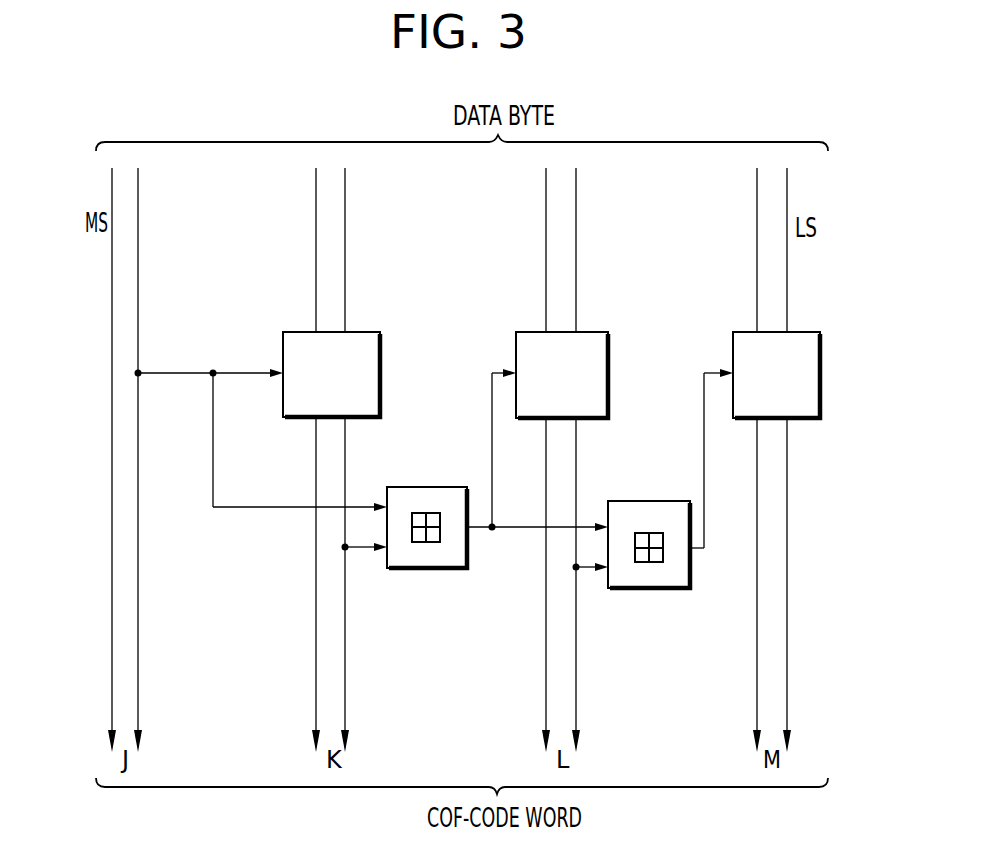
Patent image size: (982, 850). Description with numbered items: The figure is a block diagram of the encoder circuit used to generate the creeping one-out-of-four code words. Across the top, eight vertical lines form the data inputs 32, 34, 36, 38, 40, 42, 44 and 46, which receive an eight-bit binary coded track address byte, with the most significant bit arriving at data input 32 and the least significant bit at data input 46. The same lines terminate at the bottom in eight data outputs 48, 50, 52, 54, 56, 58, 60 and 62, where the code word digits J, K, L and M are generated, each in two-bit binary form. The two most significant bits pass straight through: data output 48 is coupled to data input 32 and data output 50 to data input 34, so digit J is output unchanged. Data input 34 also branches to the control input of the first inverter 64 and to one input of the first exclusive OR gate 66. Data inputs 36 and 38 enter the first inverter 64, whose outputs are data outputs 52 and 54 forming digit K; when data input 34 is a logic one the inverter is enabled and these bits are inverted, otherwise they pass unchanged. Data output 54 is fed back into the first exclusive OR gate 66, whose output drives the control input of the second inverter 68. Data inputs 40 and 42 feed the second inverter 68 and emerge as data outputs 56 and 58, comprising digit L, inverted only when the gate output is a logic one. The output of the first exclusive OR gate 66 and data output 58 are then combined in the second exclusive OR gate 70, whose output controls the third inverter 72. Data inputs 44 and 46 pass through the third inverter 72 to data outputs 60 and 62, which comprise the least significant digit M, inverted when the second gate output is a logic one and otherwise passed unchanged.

The data input 32 is at (112, 188).
The data input 34 is at (138, 189).
The data input 36 is at (316, 188).
The data input 38 is at (345, 189).
The data input 40 is at (544, 188).
The data input 42 is at (576, 189).
The data input 44 is at (757, 188).
The data input 46 is at (787, 189).
The data output 48 is at (112, 723).
The data output 50 is at (138, 724).
The data output 52 is at (316, 723).
The data output 54 is at (345, 724).
The data output 56 is at (544, 723).
The data output 58 is at (576, 724).
The data output 60 is at (757, 723).
The data output 62 is at (787, 724).
The first inverter 64 is at (366, 333).
The first exclusive OR gate 66 is at (418, 487).
The second inverter 68 is at (591, 335).
The second exclusive OR gate 70 is at (648, 503).
The third inverter 72 is at (805, 335).